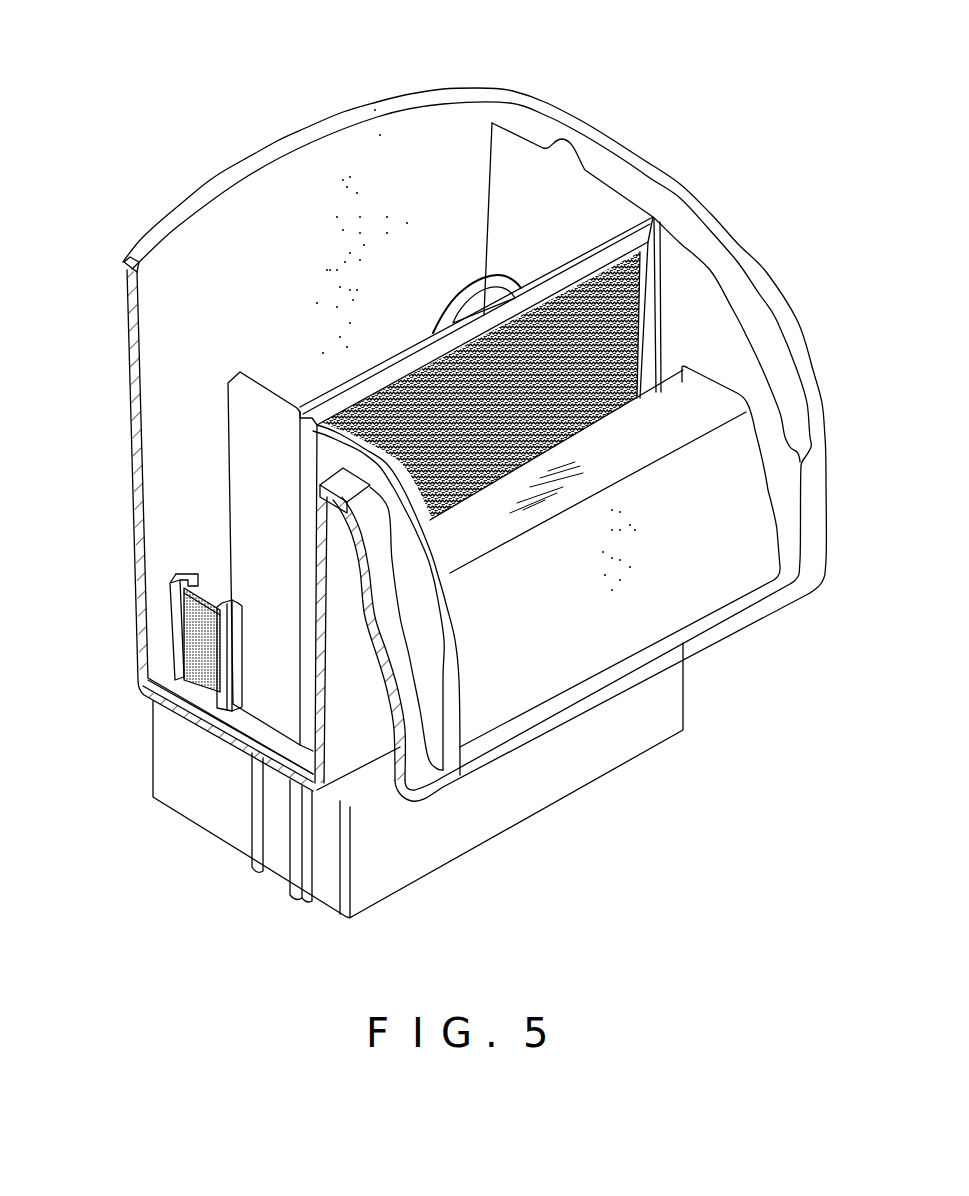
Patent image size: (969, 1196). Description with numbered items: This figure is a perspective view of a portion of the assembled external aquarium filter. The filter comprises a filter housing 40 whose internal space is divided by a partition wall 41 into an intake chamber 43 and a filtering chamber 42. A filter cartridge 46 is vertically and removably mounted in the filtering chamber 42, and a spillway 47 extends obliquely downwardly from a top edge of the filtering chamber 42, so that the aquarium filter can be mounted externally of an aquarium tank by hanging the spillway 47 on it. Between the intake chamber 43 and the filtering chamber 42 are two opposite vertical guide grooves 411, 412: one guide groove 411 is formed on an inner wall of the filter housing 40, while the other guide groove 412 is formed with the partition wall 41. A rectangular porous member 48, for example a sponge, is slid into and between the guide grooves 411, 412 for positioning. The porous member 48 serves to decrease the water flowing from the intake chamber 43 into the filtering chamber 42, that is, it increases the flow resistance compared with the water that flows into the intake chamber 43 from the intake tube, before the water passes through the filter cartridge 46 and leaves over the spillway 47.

The filter housing 40 is at (672, 173).
The partition wall 41 is at (270, 398).
The filtering chamber 42 is at (403, 159).
The intake chamber 43 is at (245, 719).
The filter cartridge 46 is at (622, 320).
The spillway 47 is at (683, 600).
The porous member 48 is at (204, 574).
The guide groove 411 is at (180, 613).
The guide groove 412 is at (222, 660).